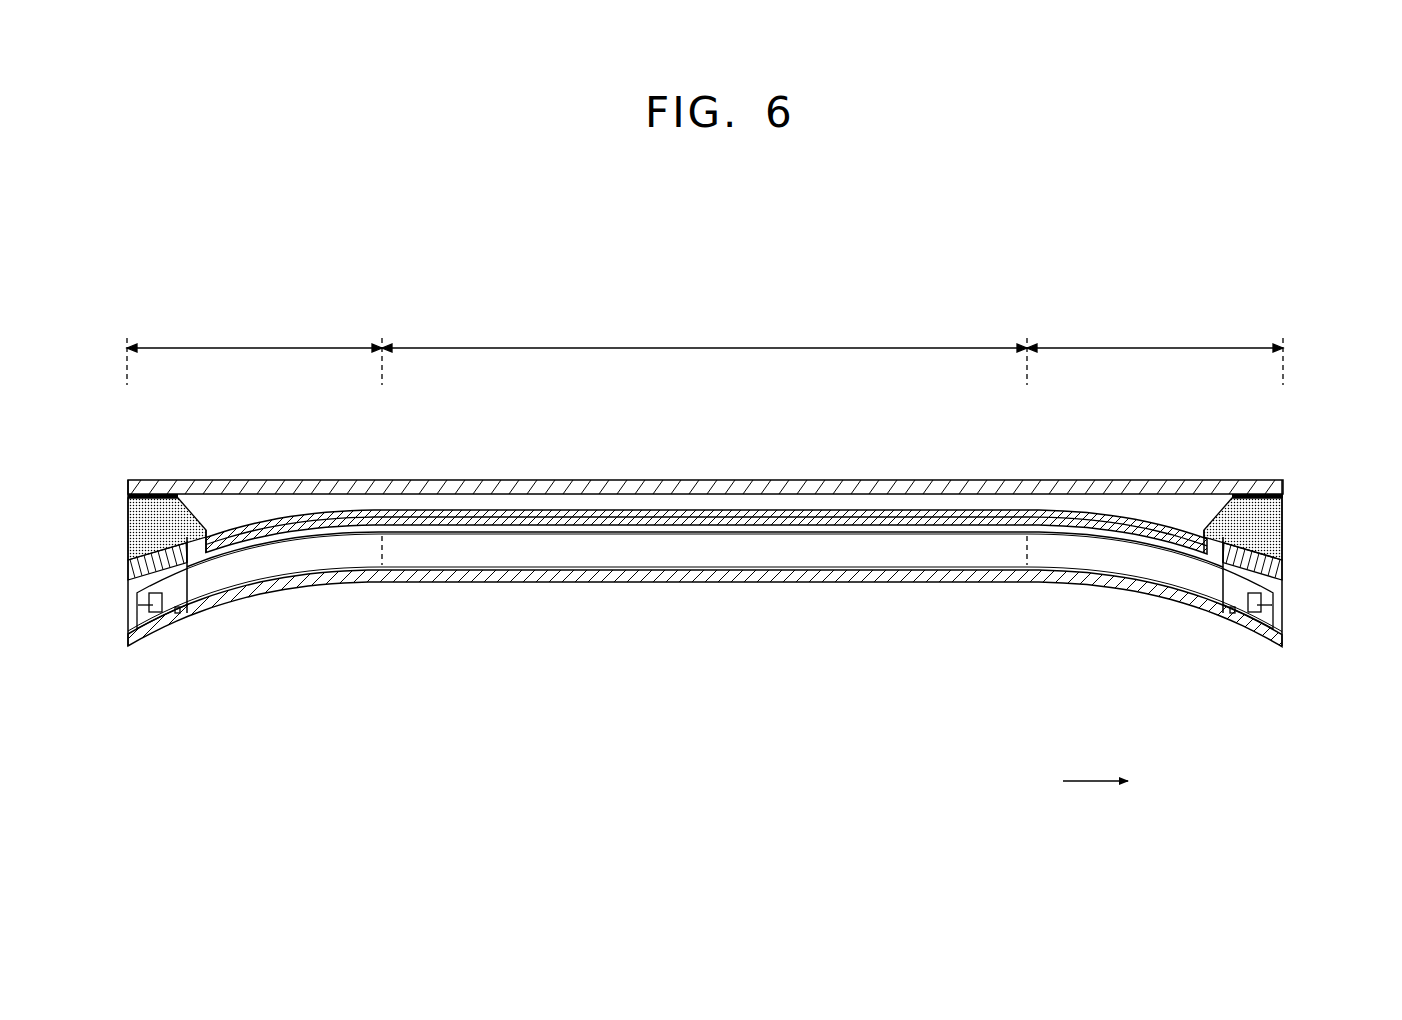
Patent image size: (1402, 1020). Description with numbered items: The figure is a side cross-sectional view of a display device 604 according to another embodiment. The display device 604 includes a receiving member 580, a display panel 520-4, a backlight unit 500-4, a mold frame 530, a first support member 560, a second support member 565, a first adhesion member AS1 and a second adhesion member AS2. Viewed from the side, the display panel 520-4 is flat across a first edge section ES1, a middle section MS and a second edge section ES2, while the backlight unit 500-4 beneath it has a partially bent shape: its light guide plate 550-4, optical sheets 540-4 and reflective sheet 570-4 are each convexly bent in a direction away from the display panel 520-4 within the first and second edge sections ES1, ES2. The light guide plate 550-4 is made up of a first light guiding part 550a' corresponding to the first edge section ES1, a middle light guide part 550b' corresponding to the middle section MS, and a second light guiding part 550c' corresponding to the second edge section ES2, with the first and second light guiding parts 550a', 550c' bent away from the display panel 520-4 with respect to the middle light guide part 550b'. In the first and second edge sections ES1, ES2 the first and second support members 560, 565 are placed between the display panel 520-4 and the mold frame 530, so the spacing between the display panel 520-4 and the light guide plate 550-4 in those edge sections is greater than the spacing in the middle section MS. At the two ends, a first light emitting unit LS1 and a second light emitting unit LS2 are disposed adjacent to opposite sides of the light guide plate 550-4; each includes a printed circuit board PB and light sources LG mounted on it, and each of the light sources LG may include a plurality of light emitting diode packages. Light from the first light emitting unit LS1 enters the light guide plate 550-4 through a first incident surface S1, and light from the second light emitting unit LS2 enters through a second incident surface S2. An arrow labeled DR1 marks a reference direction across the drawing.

The display device 604 is at (1250, 256).
The display panel 520-4 is at (1292, 485).
The first adhesion member AS1 is at (128, 497).
The second adhesion member AS2 is at (1283, 497).
The first support member 560 is at (150, 532).
The second support member 565 is at (1265, 530).
The mold frame 530 is at (150, 572).
The receiving member 580 is at (1283, 606).
The backlight unit 500-4 is at (705, 598).
The optical sheets 540-4 is at (757, 522).
The light guide plate 550-4 is at (827, 550).
The reflective sheet 570-4 is at (727, 647).
The first light guiding part 550a' is at (284, 598).
The middle light guide part 550b' is at (704, 590).
The second light guiding part 550c' is at (1125, 597).
The light sources LG is at (136, 620).
The printed circuit board PB is at (151, 615).
The first incident surface S1 is at (178, 616).
The second incident surface S2 is at (1233, 618).
The first light emitting unit LS1 is at (165, 706).
The second light emitting unit LS2 is at (1308, 706).
The first edge section ES1 is at (254, 353).
The middle section MS is at (704, 443).
The second edge section ES2 is at (1155, 353).
The first direction DR1 is at (1119, 782).